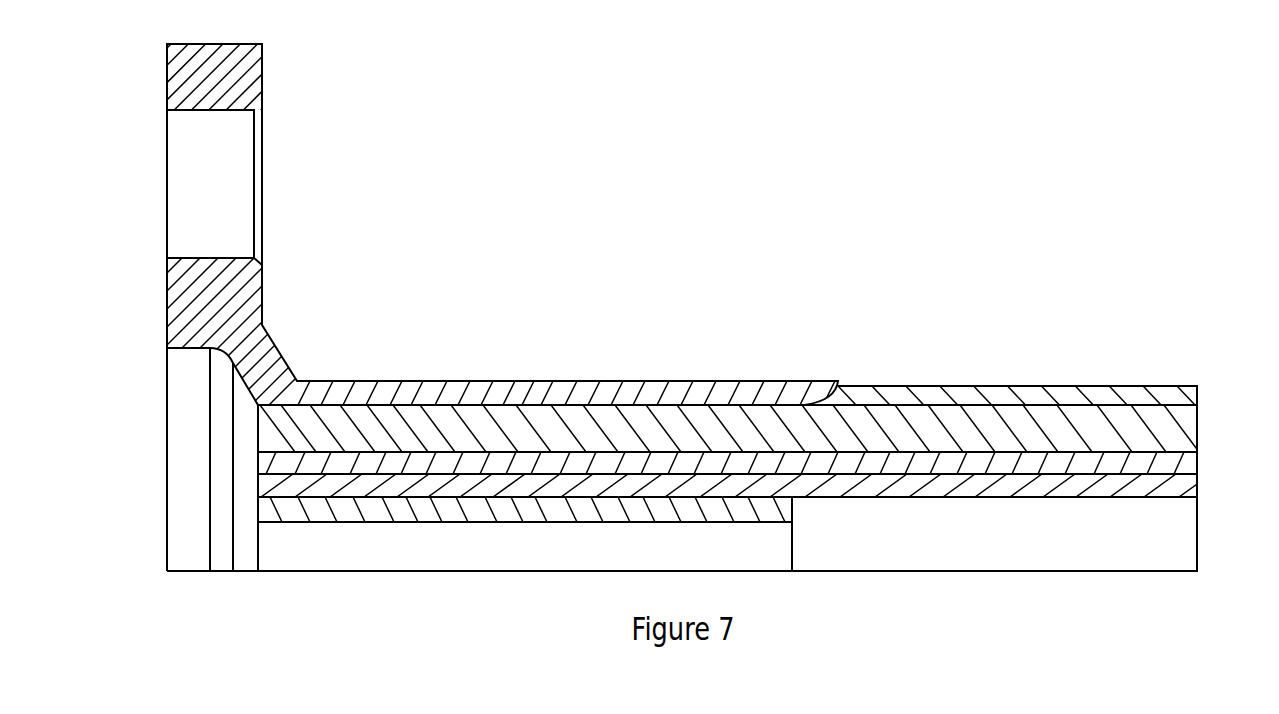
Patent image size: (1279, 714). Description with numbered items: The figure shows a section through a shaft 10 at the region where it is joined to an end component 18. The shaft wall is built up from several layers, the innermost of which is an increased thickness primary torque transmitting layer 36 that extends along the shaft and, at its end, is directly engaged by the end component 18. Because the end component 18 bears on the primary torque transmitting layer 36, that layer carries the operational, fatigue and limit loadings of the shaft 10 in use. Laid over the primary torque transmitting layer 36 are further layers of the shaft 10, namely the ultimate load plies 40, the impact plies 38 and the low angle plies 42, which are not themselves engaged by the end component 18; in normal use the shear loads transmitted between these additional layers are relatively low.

The shaft 10 is at (990, 357).
The end component 18 is at (147, 295).
The primary torque transmitting layer 36 is at (1165, 428).
The impact plies 38 is at (1177, 487).
The ultimate load plies 40 is at (1182, 463).
The low angle plies 42 is at (1077, 387).